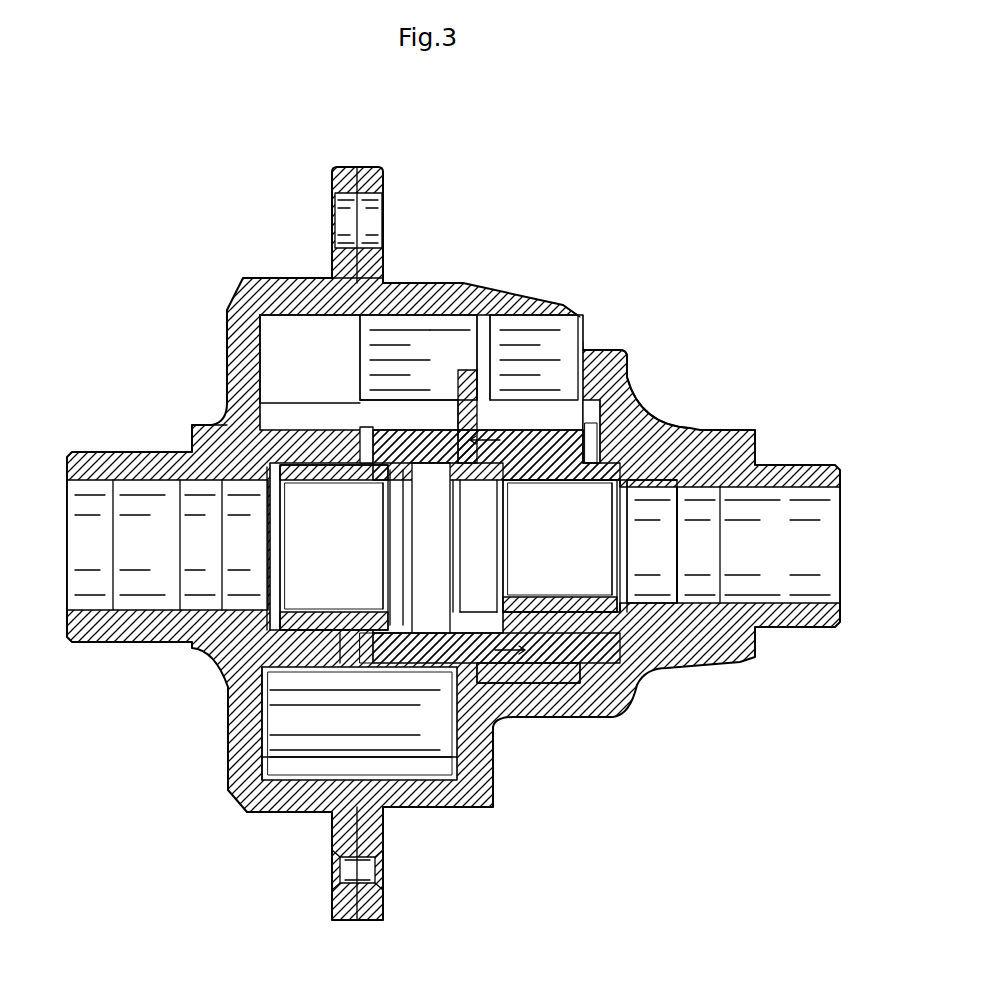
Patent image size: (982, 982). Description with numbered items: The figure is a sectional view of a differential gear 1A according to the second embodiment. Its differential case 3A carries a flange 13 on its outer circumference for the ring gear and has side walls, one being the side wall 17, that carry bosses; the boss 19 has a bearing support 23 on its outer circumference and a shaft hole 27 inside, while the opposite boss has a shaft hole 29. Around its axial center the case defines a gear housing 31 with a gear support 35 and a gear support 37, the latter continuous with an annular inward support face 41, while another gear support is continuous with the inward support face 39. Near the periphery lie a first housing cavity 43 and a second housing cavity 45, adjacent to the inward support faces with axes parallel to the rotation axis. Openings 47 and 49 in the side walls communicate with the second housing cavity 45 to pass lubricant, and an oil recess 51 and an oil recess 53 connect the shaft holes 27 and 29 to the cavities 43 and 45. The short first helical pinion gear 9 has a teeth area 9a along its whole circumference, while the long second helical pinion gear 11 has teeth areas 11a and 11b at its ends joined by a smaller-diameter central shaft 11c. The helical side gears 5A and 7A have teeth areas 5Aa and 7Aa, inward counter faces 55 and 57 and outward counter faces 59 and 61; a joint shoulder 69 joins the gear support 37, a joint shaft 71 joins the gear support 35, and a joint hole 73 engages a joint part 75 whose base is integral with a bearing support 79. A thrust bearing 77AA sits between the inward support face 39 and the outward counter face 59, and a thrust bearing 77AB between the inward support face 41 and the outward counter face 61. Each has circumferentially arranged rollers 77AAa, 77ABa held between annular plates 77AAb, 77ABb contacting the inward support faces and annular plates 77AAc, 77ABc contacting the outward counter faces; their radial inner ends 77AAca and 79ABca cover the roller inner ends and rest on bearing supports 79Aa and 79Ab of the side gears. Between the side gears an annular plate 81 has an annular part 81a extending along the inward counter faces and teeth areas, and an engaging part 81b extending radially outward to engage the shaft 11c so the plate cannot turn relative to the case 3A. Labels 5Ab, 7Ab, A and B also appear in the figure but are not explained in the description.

The differential gear 1A is at (606, 180).
The differential case 3A is at (300, 270).
The helical side gear 5A is at (300, 275).
The teeth area 5Aa is at (497, 770).
The housing bore 5Ab is at (295, 480).
The helical side gear 7A is at (560, 340).
The teeth area 7Aa is at (545, 685).
The gear hub 7Ab is at (653, 541).
The first helical pinion gear 9 is at (300, 765).
The teeth area 9a is at (320, 760).
The second helical pinion gear 11 is at (262, 330).
The teeth area 11a is at (330, 300).
The teeth area 11b is at (520, 330).
The central shaft 11c is at (430, 330).
The flange 13 is at (365, 165).
The side wall 17 is at (640, 395).
The boss 19 is at (182, 445).
The bearing support 23 is at (150, 452).
The shaft hole 27 is at (86, 545).
The shaft hole 29 is at (803, 545).
The gear housing 31 is at (447, 570).
The gear support 35 is at (215, 422).
The gear support 37 is at (715, 432).
The inward support face 39 is at (405, 625).
The inward support face 41 is at (672, 610).
The first housing cavity 43 is at (410, 770).
The second housing cavity 45 is at (565, 305).
The opening 47 is at (227, 360).
The opening 49 is at (600, 348).
The oil recess 51 is at (350, 640).
The oil recess 53 is at (660, 440).
The inward counter face 55 is at (497, 633).
The inward counter face 57 is at (431, 607).
The outward counter face 59 is at (365, 650).
The outward counter face 61 is at (630, 655).
The joint shoulder 69 is at (655, 418).
The joint shaft 71 is at (370, 440).
The joint hole 73 is at (431, 495).
The joint part 75 is at (471, 546).
The thrust bearing 77AA is at (300, 760).
The rollers 77AAa is at (265, 370).
The annular plate 77AAb is at (300, 400).
The annular plate 77AAc is at (368, 320).
The radial inner end 77AAca is at (285, 495).
The thrust bearing 77AB is at (580, 690).
The rollers 77ABa is at (650, 460).
The annular plate 77ABb is at (625, 470).
The annular plate 77ABc is at (610, 405).
The bearing support 79 is at (486, 546).
The bearing support 79Aa is at (385, 480).
The bearing support 79Ab is at (600, 480).
The radial inner end 79ABca is at (622, 500).
The annular plate 81 is at (472, 370).
The annular part 81a is at (482, 380).
The engaging part 81b is at (465, 405).
The section A is at (460, 641).
The section B is at (456, 458).